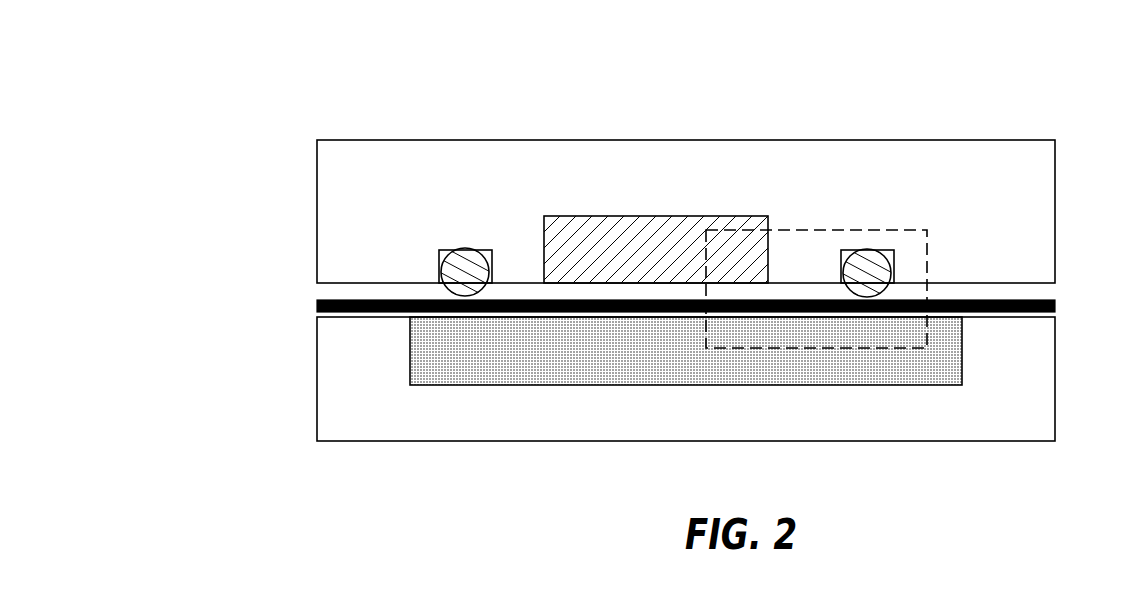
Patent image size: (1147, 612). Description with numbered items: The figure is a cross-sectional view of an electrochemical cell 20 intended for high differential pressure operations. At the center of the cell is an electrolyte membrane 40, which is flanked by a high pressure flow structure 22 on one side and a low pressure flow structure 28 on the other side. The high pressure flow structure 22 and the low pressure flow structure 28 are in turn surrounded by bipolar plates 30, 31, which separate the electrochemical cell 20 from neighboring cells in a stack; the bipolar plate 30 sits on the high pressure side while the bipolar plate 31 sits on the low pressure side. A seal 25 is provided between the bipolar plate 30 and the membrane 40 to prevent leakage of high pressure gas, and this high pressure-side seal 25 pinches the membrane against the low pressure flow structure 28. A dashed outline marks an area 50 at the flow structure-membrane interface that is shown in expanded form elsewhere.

The electrochemical cell 20 is at (936, 98).
The high pressure flow structure 22 is at (652, 233).
The seal 25 is at (455, 268).
The low pressure flow structure 28 is at (625, 386).
The bipolar plate 30 is at (337, 188).
The bipolar plate 31 is at (352, 405).
The electrolyte membrane 40 is at (1055, 302).
The area 50 is at (869, 222).